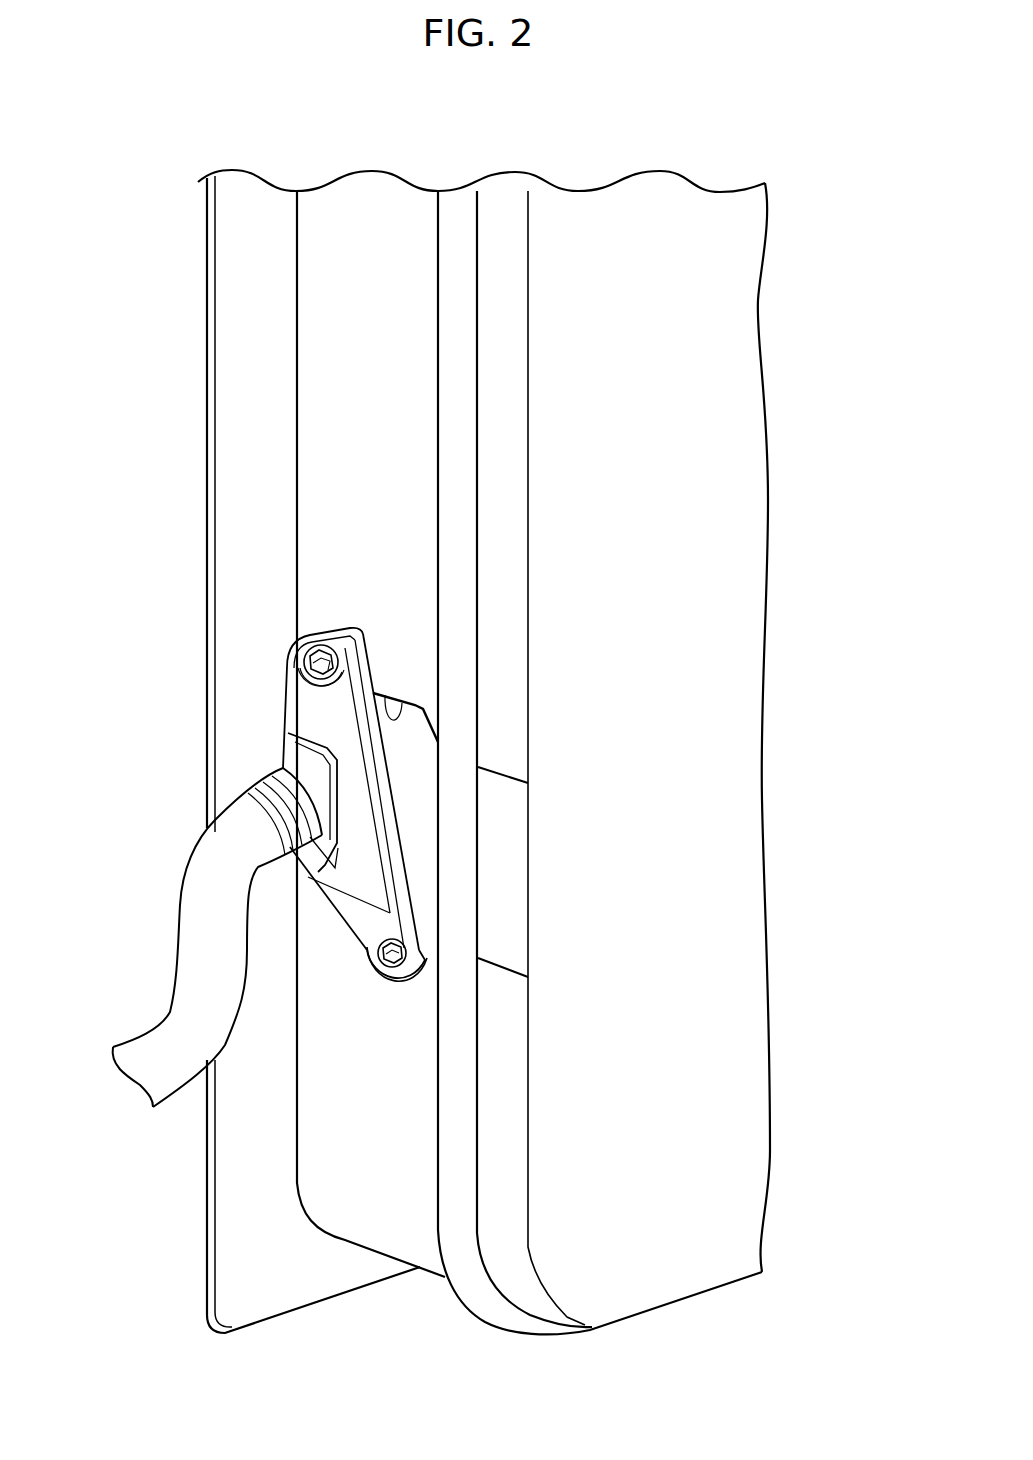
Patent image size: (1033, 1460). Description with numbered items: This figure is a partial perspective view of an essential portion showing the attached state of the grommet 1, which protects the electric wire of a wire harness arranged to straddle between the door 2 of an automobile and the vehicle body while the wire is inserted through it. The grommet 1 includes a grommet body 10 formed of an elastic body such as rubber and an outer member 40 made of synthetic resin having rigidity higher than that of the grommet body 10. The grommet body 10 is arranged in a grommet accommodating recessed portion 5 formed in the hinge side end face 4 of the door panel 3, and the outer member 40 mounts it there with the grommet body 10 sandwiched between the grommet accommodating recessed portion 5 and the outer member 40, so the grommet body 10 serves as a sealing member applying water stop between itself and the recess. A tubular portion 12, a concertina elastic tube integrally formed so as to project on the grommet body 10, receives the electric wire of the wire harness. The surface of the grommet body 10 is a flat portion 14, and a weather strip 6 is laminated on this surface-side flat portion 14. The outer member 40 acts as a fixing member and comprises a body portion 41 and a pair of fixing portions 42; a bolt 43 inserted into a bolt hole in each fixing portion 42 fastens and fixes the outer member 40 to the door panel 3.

The grommet 1 is at (184, 798).
The door 2 is at (205, 297).
The door panel 3 is at (697, 1294).
The hinge side end face 4 is at (321, 369).
The grommet accommodating recessed portion 5 is at (373, 693).
The weather strip 6 is at (457, 1158).
The grommet body 10 is at (414, 704).
The tubular portion 12 is at (150, 1030).
The flat portion 14 is at (497, 783).
The outer member 40 is at (282, 869).
The body portion 41 is at (288, 723).
The fixing portion 42 is at (300, 700).
The bolt 43 is at (306, 655).